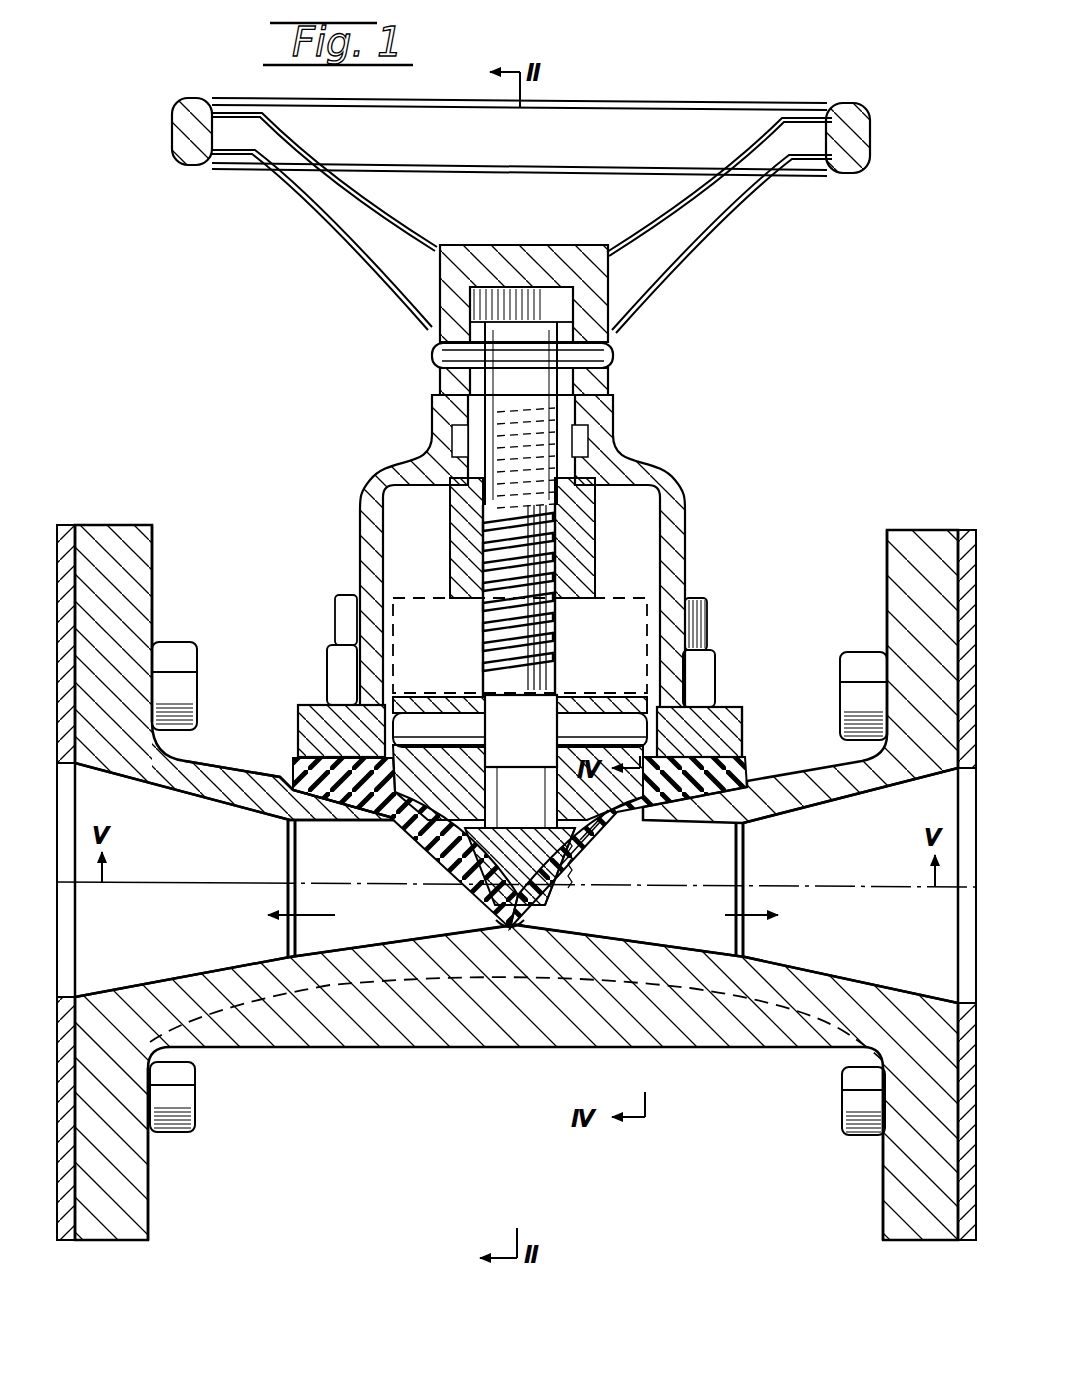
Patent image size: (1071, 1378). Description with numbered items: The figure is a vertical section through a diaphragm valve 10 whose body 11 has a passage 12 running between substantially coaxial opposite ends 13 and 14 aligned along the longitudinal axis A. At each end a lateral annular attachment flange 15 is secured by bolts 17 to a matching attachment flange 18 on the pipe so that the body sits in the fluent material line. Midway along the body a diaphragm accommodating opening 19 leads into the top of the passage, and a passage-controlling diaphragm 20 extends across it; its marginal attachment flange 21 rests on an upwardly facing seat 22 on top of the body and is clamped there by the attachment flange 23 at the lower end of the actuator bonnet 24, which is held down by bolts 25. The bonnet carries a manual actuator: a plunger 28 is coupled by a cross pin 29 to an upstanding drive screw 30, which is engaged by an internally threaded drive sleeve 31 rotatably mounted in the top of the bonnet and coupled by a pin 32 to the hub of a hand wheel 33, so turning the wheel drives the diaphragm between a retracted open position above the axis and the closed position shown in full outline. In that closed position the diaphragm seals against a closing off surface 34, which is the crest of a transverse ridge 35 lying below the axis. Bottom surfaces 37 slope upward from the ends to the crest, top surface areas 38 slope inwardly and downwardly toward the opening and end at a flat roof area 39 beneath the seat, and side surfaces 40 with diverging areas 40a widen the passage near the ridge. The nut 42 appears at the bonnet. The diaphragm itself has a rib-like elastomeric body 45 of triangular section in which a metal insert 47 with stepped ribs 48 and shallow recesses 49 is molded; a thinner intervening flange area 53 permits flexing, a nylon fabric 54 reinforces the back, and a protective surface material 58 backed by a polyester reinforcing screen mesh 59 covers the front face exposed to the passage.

The diaphragm valve 10 is at (236, 482).
The body 11 is at (798, 762).
The passage 12 is at (224, 824).
The opposite end of passage 13 is at (112, 926).
The opposite end of passage 14 is at (942, 928).
The lateral annular attachment flange 15 is at (135, 556).
The bolts 17 is at (182, 672).
The matching attachment flange 18 is at (68, 527).
The diaphragm accommodating opening 19 is at (356, 826).
The passage-controlling diaphragm 20 is at (440, 856).
The marginal attachment flange 21 is at (295, 766).
The seat 22 is at (302, 745).
The attachment flange of bonnet 23 is at (728, 716).
The actuator bonnet 24 is at (670, 505).
The bolts 25 is at (705, 611).
The plunger 28 is at (428, 600).
The cross pin 29 is at (400, 705).
The drive screw 30 is at (470, 542).
The drive sleeve 31 is at (585, 556).
The pin 32 is at (595, 358).
The hand wheel 33 is at (700, 110).
The closing off surface (crest) 34 is at (540, 918).
The transverse ridge 35 is at (515, 935).
The bottom surfaces 37 is at (200, 976).
The top surface areas 38 is at (155, 785).
The flat area (passage roof area) 39 is at (288, 832).
The side surfaces 40 is at (523, 914).
The diverging areas of side surfaces 40a is at (200, 1032).
The bonnet nut 42 is at (338, 655).
The rib-like elastomeric body 45 is at (520, 758).
The metal insert 47 is at (570, 890).
The ribs 48 is at (495, 886).
The shallow recesses 49 is at (572, 866).
The intervening flange area 53 is at (439, 782).
The nylon fabric reinforcement 54 is at (600, 782).
The protective surface material 58 is at (590, 848).
The polyester reinforcing screen mesh 59 is at (605, 832).
The axis of alignment A is at (168, 883).